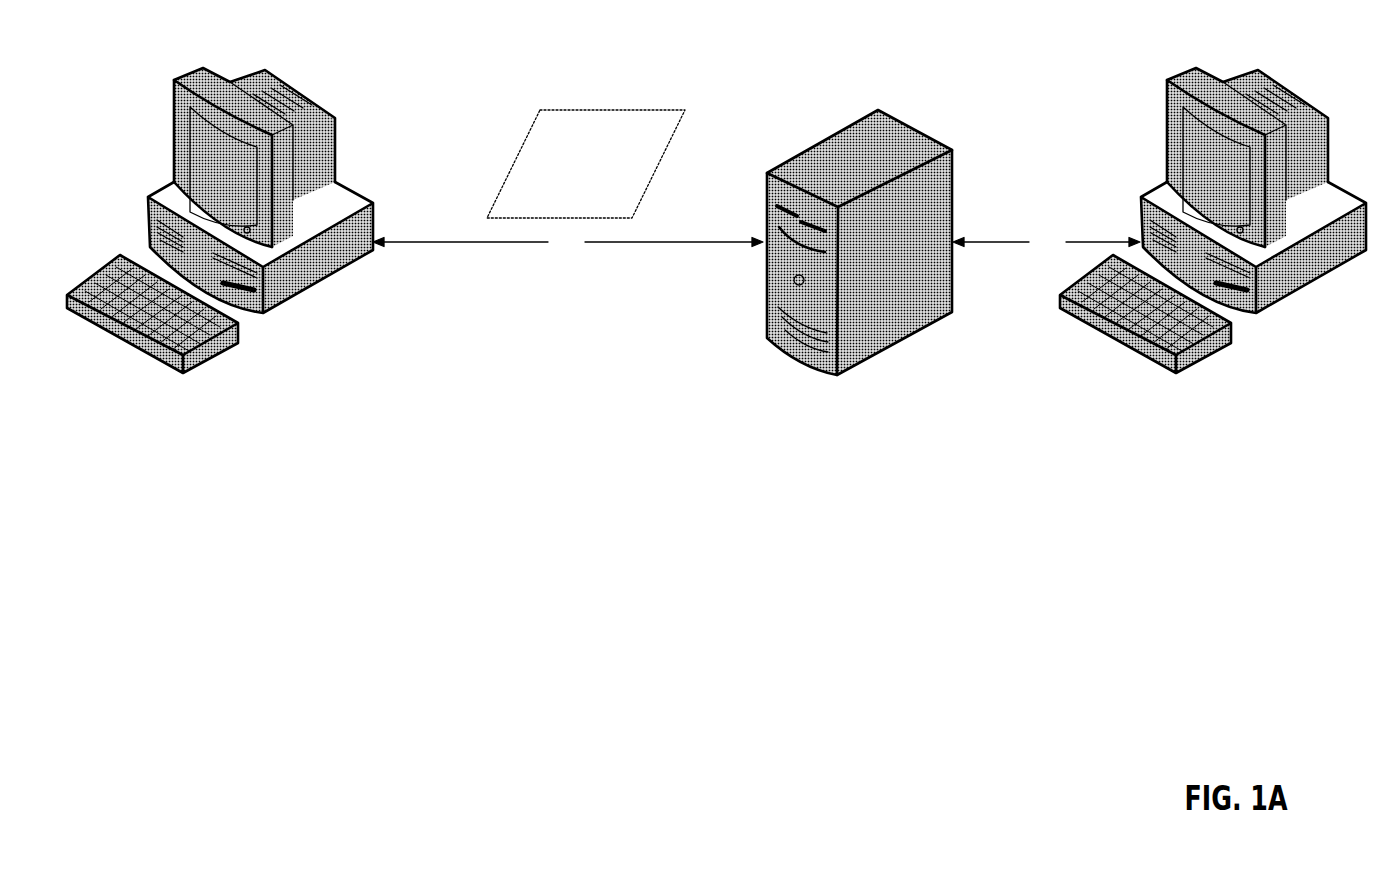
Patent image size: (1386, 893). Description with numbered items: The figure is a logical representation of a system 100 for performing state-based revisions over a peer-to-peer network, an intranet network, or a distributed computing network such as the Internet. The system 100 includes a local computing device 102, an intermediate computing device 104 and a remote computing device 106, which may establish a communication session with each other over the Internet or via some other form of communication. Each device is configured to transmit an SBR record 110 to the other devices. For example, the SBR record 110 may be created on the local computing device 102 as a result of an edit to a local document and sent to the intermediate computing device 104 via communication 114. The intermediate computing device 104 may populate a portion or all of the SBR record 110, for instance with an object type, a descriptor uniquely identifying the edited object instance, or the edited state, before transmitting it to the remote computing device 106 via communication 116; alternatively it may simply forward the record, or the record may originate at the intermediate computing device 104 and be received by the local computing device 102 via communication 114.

The system 100 is at (716, 321).
The local computing device 102 is at (220, 240).
The intermediate computing device 104 is at (859, 259).
The remote computing device 106 is at (1213, 240).
The SBR record 110 is at (615, 142).
The communication 114 is at (568, 242).
The communication 116 is at (1046, 242).